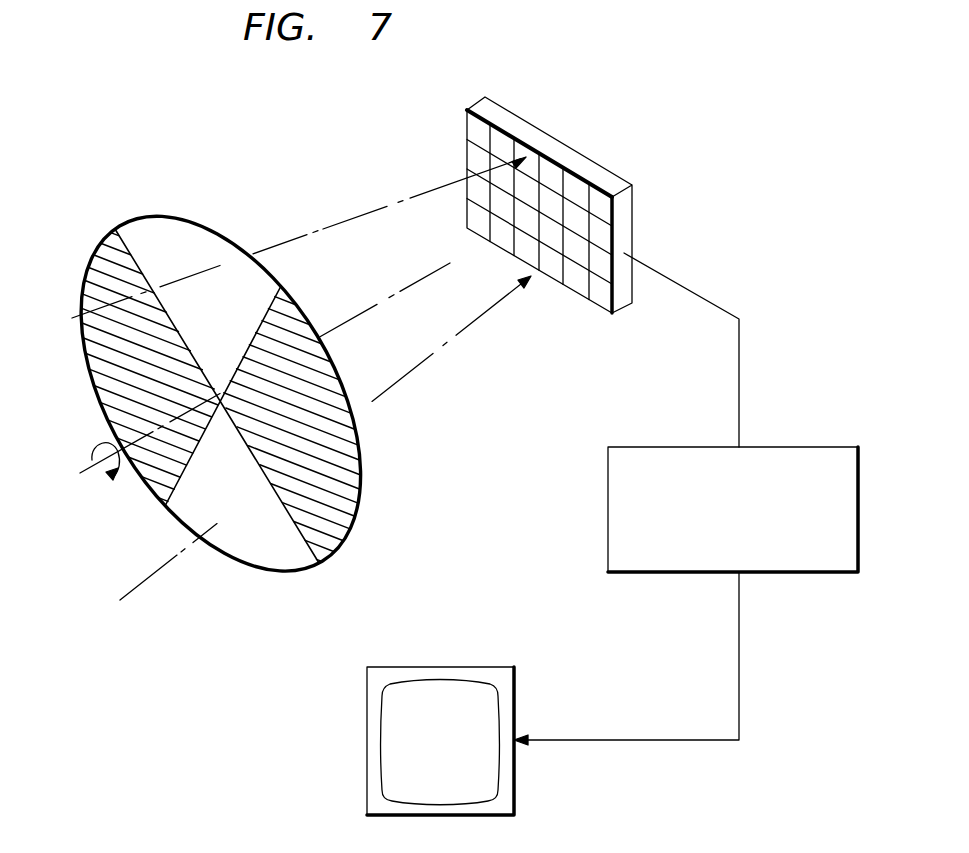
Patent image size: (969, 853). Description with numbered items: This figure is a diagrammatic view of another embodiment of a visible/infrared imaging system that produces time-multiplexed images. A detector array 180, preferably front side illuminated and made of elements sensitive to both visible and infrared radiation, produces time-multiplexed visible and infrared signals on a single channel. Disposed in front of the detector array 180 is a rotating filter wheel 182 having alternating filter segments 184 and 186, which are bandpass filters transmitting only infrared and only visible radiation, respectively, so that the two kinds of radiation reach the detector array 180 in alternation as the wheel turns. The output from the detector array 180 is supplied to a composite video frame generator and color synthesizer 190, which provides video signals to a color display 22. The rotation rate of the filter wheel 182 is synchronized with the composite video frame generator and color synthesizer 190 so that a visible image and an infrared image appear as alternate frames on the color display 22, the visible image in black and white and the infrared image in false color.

The rotating filter wheel 182 is at (157, 216).
The filter segments 184 is at (335, 447).
The filter segments 186 is at (193, 243).
The detector array 180 is at (603, 162).
The composite video frame generator and color synthesizer 190 is at (608, 528).
The color display 22 is at (515, 700).